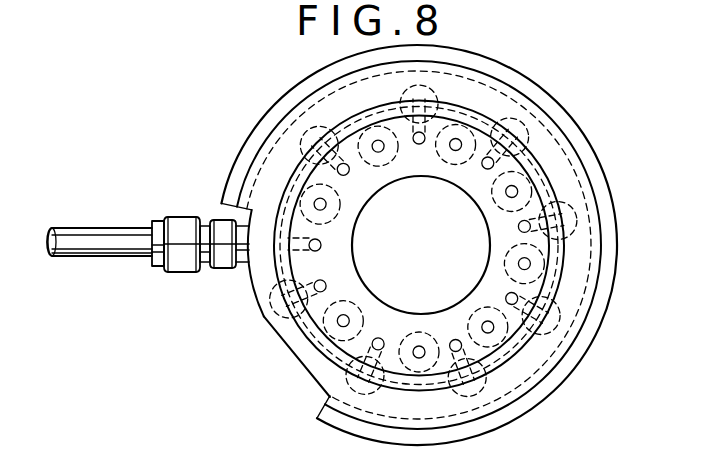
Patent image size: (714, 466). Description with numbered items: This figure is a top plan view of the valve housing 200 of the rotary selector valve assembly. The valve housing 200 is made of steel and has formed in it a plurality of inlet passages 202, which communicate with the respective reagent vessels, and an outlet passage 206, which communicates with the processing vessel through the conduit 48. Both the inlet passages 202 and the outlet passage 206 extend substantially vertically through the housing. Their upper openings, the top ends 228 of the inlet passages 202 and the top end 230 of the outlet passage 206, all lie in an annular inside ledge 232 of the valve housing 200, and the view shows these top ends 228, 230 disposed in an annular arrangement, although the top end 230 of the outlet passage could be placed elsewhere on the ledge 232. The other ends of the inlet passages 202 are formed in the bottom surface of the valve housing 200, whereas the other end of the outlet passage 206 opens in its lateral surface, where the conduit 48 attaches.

The conduit 48 is at (102, 240).
The valve housing 200 is at (567, 101).
The inlet passages 202 is at (536, 226).
The outlet passage 206 is at (276, 251).
The top ends of the inlet passages 228 is at (506, 193).
The top end of the outlet passage 230 is at (322, 245).
The annular inside ledge 232 is at (300, 335).